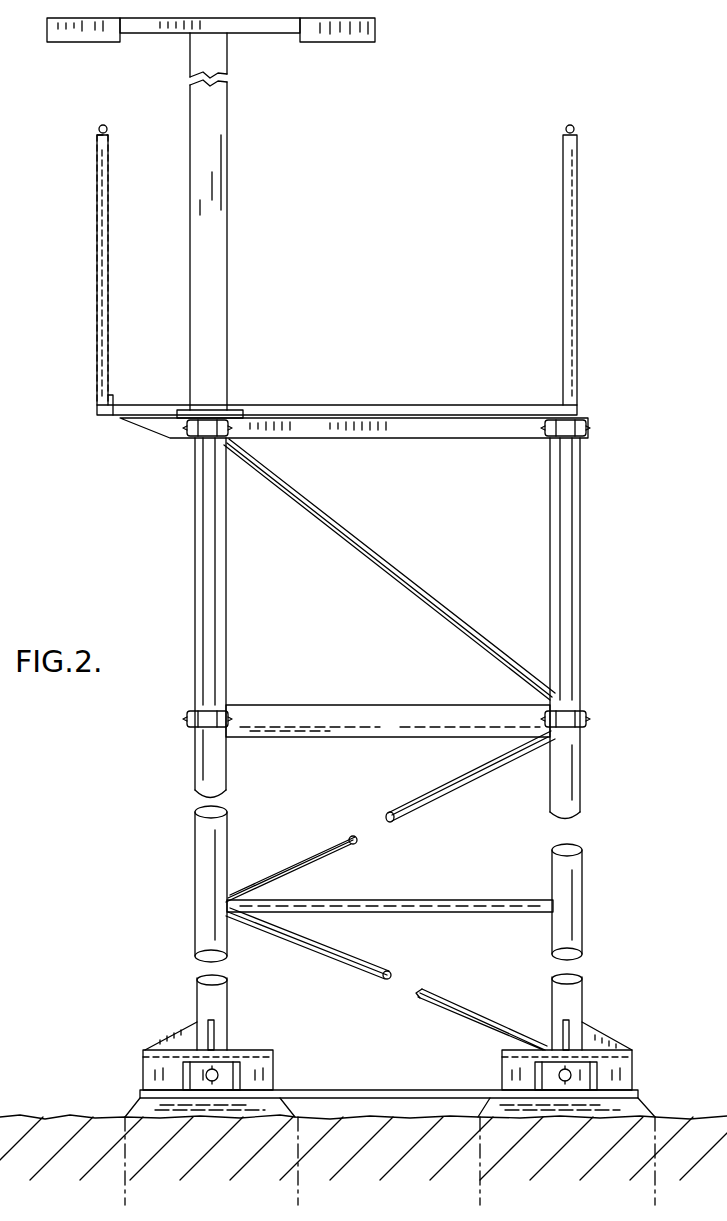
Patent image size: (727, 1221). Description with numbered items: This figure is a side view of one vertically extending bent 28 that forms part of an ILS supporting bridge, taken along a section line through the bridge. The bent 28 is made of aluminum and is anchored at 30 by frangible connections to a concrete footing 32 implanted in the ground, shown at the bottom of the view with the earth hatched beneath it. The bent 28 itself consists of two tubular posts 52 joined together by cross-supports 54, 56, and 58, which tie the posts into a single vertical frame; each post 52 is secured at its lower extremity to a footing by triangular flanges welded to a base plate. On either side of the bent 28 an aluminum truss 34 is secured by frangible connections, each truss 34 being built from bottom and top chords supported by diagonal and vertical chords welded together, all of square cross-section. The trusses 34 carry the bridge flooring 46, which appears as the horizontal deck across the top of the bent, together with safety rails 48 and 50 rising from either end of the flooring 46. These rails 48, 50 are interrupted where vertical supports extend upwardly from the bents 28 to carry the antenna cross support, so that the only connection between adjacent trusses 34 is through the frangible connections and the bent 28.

The bent 28 is at (425, 628).
The anchoring location 30 is at (603, 1000).
The concrete footing 32 is at (300, 1185).
The aluminum truss 34 is at (572, 512).
The bridge flooring 46 is at (393, 409).
The safety rail 48 is at (100, 127).
The safety rail 50 is at (575, 127).
The tubular post 52 is at (197, 880).
The cross-support 54 is at (445, 997).
The cross-support 56 is at (397, 897).
The cross-support 58 is at (415, 800).